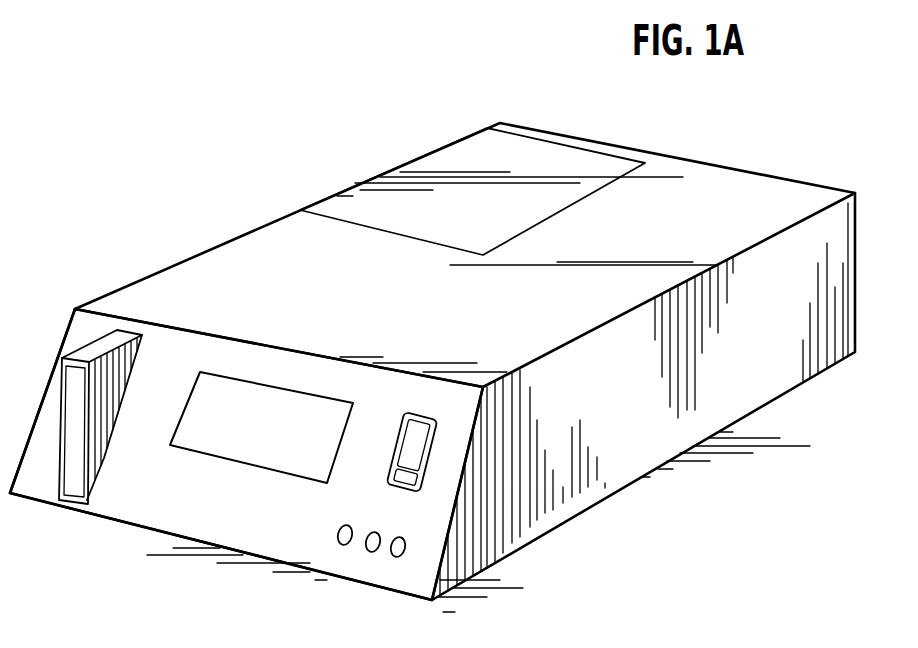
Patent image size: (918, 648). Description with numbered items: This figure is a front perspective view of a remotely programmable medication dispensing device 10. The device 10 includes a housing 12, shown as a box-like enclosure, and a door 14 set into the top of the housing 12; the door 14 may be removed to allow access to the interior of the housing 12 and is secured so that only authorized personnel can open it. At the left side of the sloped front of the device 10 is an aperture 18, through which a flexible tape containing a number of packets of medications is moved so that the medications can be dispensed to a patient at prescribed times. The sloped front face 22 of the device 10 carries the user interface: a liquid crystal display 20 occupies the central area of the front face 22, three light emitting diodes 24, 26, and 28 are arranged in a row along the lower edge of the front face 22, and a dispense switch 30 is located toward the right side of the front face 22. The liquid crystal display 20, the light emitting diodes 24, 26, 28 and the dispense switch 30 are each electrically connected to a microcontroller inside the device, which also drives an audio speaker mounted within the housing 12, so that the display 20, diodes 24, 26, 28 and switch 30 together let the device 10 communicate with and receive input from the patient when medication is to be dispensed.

The remotely programmable medication dispensing device 10 is at (383, 146).
The housing 12 is at (765, 190).
The door 14 is at (474, 152).
The aperture 18 is at (60, 466).
The liquid crystal display 20 is at (221, 395).
The front face 22 is at (145, 510).
The light emitting diode 24 is at (342, 546).
The light emitting diode 26 is at (371, 553).
The light emitting diode 28 is at (395, 558).
The dispense switch 30 is at (423, 453).